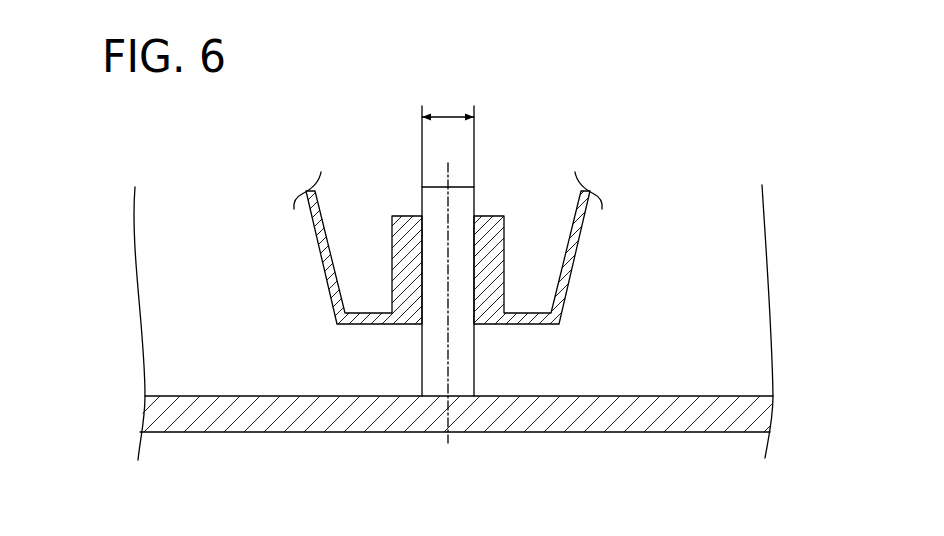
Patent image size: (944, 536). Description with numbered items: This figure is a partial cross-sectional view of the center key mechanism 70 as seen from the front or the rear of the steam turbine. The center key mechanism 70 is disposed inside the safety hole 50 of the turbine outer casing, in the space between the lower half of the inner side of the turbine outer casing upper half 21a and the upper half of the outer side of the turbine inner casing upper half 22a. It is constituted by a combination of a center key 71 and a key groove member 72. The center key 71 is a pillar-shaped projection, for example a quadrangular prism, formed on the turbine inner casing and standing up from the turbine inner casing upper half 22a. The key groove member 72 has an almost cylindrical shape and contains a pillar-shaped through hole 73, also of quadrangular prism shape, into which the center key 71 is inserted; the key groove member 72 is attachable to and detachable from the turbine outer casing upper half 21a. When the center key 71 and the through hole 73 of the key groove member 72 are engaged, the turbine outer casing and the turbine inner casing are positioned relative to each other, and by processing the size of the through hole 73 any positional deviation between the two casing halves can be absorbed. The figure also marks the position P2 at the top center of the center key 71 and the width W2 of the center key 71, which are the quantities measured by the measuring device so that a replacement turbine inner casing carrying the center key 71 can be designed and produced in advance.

The turbine inner casing upper half 22a is at (357, 433).
The center key mechanism 70 is at (444, 291).
The center key 71 is at (422, 368).
The key groove member 72 is at (444, 257).
The through hole 73 is at (405, 232).
The safety hole 50 is at (448, 162).
The turbine outer casing upper half 21a is at (318, 208).
The width of the center key W2 is at (448, 135).
The position at a top center of the center key P2 is at (449, 187).